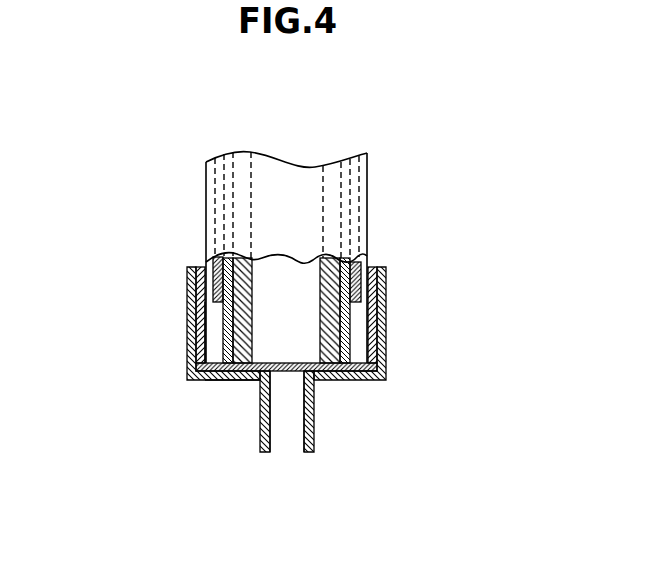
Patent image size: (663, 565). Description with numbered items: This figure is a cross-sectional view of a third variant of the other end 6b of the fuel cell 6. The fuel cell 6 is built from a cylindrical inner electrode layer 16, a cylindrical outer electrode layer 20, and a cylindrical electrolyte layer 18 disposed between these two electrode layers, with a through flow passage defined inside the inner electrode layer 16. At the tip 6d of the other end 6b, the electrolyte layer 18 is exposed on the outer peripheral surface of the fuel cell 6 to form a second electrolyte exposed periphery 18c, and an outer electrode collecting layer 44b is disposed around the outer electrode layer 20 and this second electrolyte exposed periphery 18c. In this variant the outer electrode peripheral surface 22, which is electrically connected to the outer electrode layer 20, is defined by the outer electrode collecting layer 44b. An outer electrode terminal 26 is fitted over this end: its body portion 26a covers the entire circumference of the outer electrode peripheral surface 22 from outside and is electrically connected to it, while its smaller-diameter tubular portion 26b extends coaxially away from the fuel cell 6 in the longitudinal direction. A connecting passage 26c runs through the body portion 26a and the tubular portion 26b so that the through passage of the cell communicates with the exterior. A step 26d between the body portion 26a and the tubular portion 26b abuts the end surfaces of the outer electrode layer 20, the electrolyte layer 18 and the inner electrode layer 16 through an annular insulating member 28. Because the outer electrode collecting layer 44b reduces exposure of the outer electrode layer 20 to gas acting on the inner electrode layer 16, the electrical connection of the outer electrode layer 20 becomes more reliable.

The fuel cell 6 is at (188, 195).
The other end 6b is at (420, 218).
The tip 6d is at (187, 403).
The outer electrode peripheral surface 22 is at (205, 223).
The electrolyte layer 18 is at (348, 272).
The second electrolyte exposed periphery 18c is at (222, 338).
The outer electrode layer 20 is at (217, 283).
The inner electrode layer 16 is at (356, 300).
The outer electrode terminal 26 is at (392, 362).
The body portion 26a is at (387, 325).
The tubular portion 26b is at (315, 437).
The connecting passage 26c is at (303, 427).
The step 26d is at (325, 380).
The annular insulating member 28 is at (228, 381).
The outer electrode collecting layer 44b is at (205, 345).